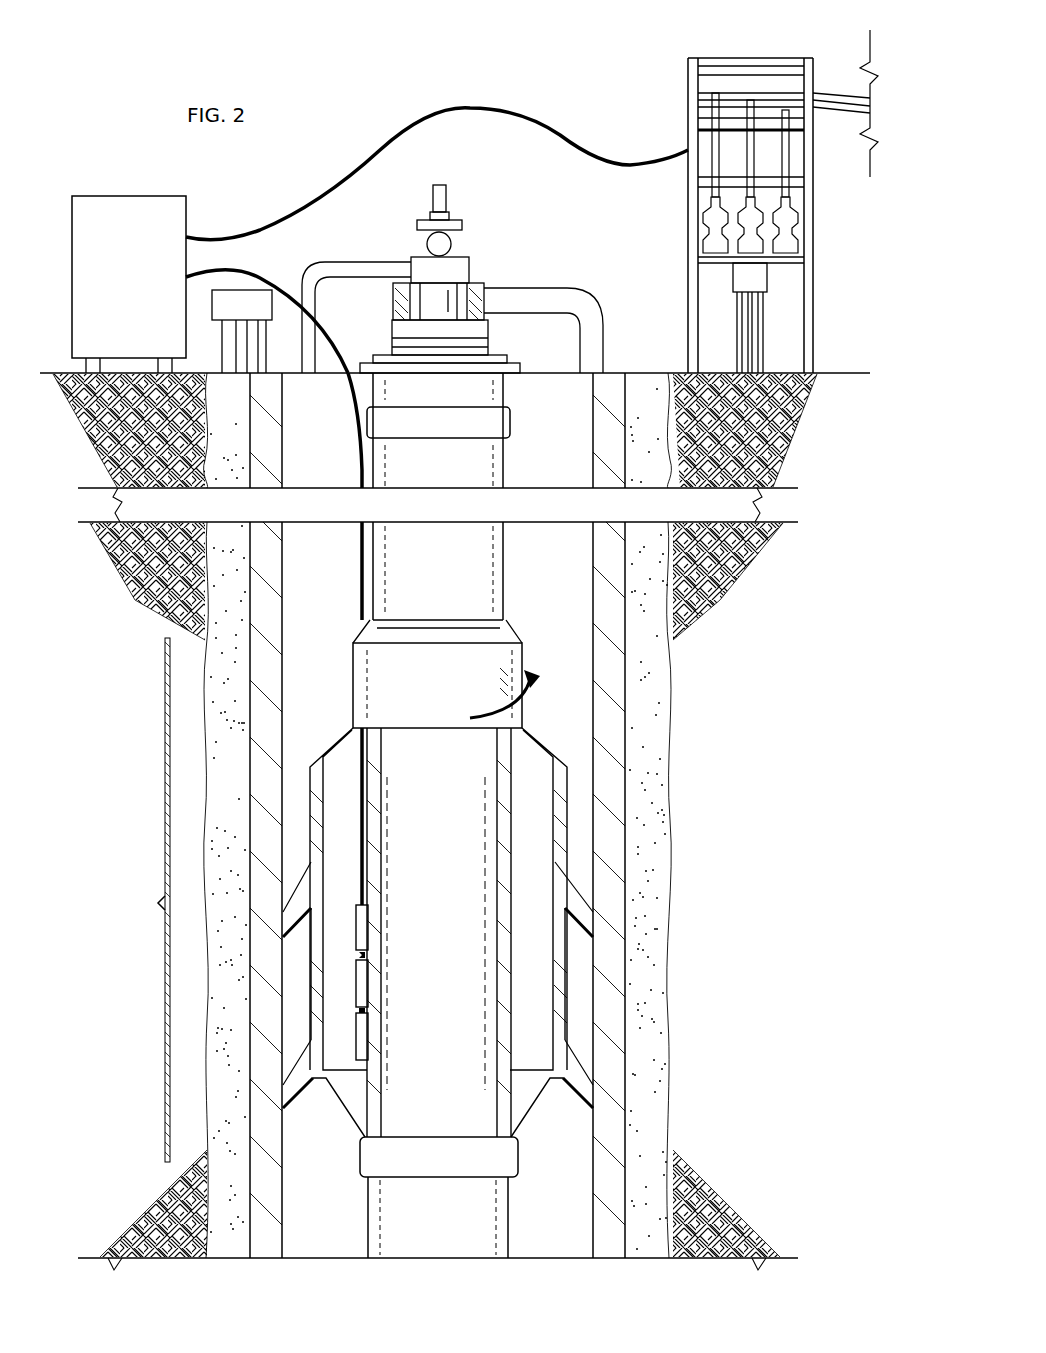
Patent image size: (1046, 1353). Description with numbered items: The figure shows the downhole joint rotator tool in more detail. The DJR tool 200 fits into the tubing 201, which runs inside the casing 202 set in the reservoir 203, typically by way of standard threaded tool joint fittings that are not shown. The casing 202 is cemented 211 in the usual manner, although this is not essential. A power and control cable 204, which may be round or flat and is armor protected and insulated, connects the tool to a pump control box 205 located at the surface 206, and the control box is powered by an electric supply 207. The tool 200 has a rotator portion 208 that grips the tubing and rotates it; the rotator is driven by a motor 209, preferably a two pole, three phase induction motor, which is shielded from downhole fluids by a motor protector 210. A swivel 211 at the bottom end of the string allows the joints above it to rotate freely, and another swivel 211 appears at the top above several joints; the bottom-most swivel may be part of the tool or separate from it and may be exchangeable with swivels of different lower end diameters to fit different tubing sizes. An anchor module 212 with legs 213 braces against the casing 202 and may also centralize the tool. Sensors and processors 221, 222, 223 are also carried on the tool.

The DJR tool 200 is at (137, 900).
The tubing 201 is at (505, 468).
The casing 202 is at (612, 748).
The reservoir 203 is at (806, 676).
The power and control cable 204 is at (360, 575).
The pump control box 205 is at (133, 195).
The surface 206 is at (846, 372).
The electric supply 207 is at (686, 217).
The rotator portion 208 is at (456, 694).
The motor 209 is at (342, 757).
The motor protector 210 is at (378, 747).
The swivel 211 is at (512, 424).
The anchor module 212 is at (565, 960).
The legs 213 is at (312, 1098).
The sensors and processors 221 is at (368, 925).
The sensors and processors 222 is at (368, 982).
The sensors and processors 223 is at (368, 1050).